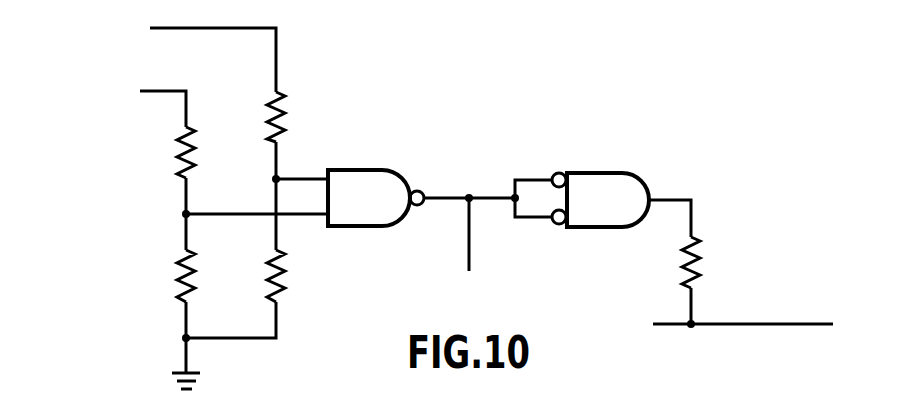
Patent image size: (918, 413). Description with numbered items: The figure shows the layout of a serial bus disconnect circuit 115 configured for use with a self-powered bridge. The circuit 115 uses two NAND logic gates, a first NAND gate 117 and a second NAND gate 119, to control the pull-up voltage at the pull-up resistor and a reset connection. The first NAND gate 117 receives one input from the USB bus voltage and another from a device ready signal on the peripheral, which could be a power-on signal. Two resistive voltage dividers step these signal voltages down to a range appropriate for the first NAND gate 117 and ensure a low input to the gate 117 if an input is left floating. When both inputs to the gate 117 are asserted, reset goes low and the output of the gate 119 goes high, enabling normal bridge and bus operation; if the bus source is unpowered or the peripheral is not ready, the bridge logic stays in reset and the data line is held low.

The serial bus disconnect circuit 115 is at (491, 118).
The first NAND gate 117 is at (373, 170).
The NAND gate 119 is at (613, 173).